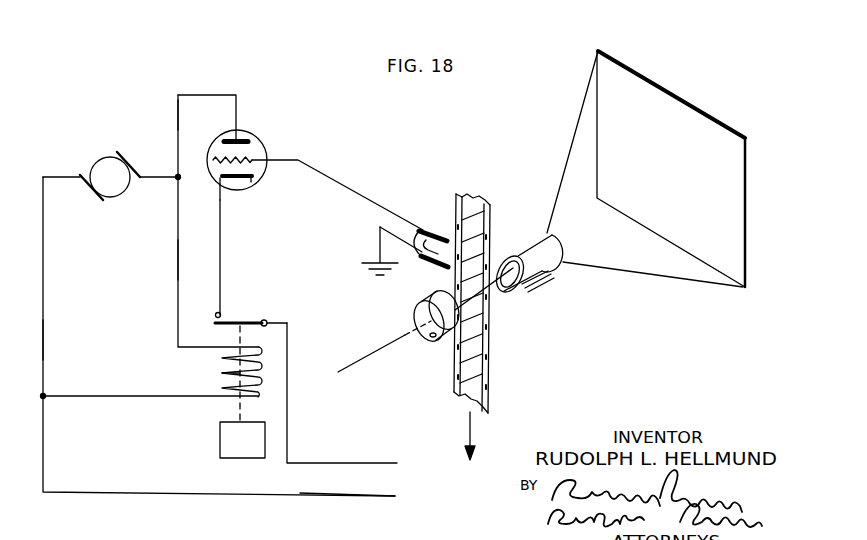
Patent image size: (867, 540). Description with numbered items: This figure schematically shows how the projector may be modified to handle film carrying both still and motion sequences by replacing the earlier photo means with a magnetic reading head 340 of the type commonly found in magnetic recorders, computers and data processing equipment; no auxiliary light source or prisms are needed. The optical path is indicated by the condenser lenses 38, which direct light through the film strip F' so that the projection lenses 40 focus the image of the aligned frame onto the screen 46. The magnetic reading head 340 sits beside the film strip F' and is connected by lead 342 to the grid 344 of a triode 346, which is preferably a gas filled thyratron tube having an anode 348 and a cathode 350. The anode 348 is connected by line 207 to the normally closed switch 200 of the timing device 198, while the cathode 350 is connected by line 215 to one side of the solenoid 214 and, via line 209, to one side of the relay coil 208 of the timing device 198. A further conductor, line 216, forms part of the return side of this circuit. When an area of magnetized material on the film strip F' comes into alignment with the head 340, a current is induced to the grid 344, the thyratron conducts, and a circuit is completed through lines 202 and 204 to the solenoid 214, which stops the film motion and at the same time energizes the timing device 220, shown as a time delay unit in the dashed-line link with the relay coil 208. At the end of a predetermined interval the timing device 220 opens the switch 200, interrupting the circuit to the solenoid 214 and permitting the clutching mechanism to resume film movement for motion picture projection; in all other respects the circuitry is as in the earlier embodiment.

The solenoid 214 is at (92, 165).
The line 215 is at (178, 117).
The line 209 is at (178, 262).
The conductor 216 is at (43, 340).
The cathode 350 is at (247, 138).
The triode 346 is at (265, 143).
The grid 344 is at (254, 175).
The anode 348 is at (242, 179).
The line 207 is at (220, 264).
The lead 342 is at (340, 185).
The magnetic reading head 340 is at (427, 228).
The normally closed switch 200 is at (246, 318).
The timing device 198 is at (276, 384).
The relay coil 208 is at (220, 372).
The timing device 220 is at (220, 432).
The line 202 is at (377, 461).
The line 204 is at (385, 497).
The film strip F' is at (490, 322).
The condenser lenses 38 is at (432, 302).
The projection lenses 40 is at (538, 282).
The screen 46 is at (665, 84).